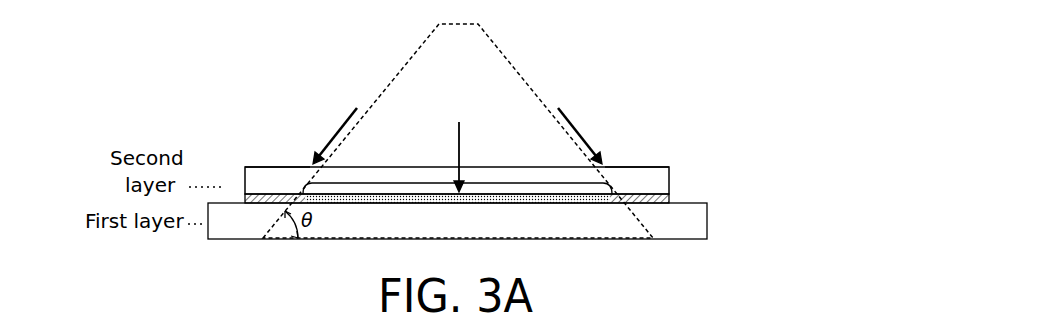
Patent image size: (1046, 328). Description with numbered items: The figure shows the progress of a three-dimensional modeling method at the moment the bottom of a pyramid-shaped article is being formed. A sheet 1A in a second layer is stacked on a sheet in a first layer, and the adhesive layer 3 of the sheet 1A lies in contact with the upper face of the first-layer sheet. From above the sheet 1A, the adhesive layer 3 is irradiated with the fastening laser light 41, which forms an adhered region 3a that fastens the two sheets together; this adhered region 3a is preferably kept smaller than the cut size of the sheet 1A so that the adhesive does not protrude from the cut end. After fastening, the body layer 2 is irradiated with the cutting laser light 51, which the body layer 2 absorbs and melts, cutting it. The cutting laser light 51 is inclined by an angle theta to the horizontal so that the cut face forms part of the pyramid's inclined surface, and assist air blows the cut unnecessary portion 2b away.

The sheet 1A is at (508, 179).
The body layer 2 is at (669, 177).
The cut unnecessary portion 2b is at (310, 162).
The adhesive layer 3 is at (489, 179).
The adhered region 3a is at (398, 183).
The fastening laser light 41 is at (460, 142).
The cutting laser light 51 is at (345, 123).